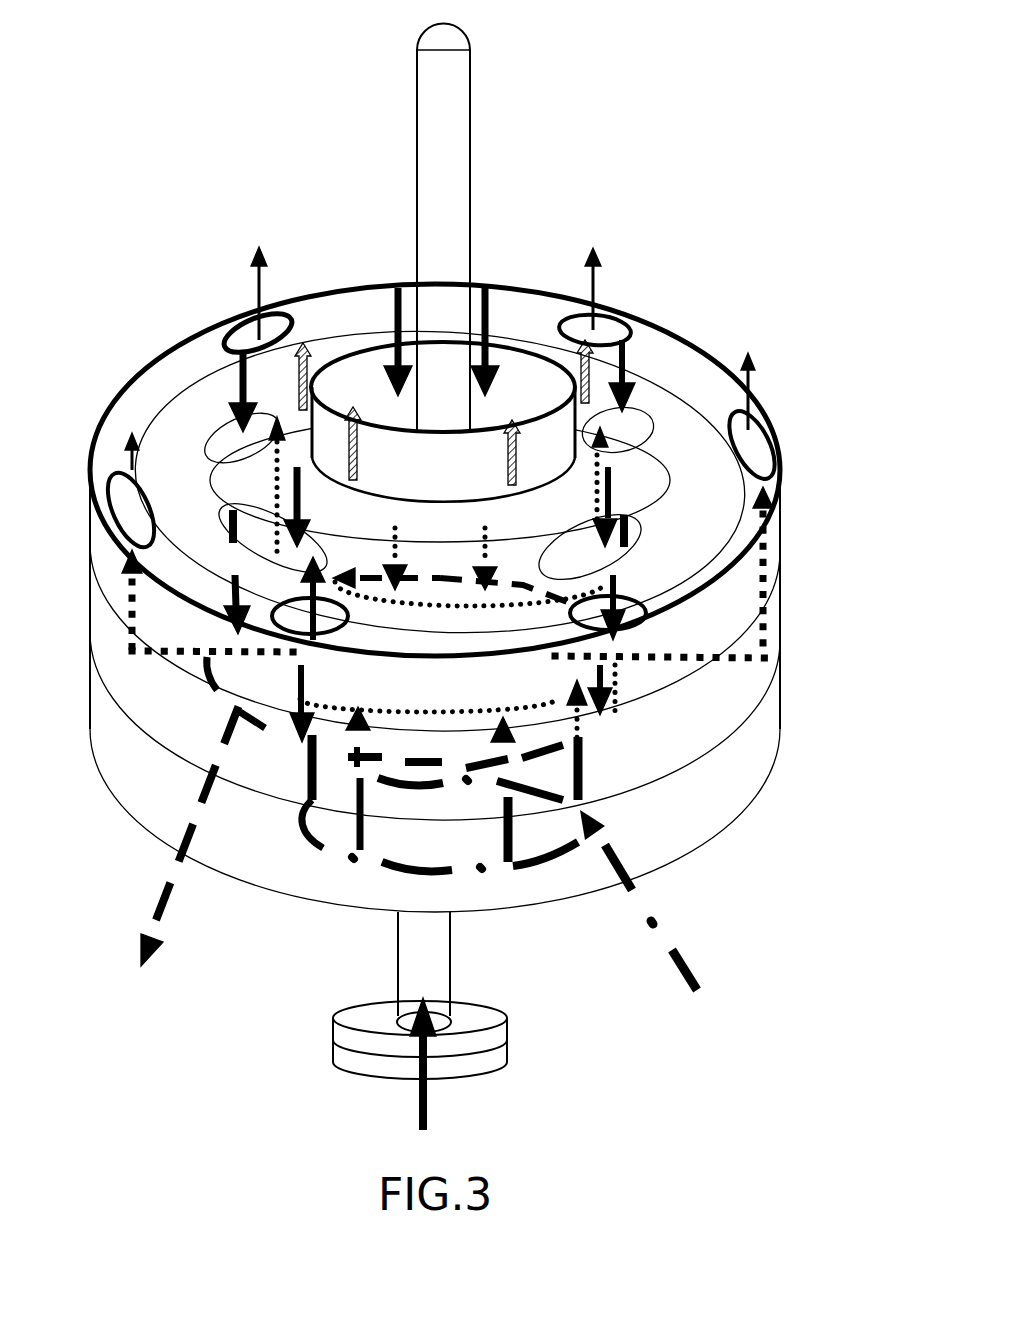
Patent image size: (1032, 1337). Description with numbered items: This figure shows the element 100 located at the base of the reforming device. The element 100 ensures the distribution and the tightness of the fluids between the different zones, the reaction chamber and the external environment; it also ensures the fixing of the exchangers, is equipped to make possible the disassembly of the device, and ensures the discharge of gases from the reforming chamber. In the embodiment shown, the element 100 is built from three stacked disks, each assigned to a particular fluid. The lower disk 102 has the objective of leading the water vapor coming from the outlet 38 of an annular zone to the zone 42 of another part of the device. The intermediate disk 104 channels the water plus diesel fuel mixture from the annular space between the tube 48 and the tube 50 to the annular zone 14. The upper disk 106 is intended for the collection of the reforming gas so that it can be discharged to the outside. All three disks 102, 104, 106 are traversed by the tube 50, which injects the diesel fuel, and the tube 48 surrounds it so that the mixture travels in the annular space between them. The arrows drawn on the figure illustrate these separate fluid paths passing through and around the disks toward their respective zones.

The element 100 is at (748, 289).
The tube 50 is at (452, 108).
The tube 48 is at (517, 338).
The zone 42 is at (587, 420).
The annular zone 14 is at (760, 452).
The upper disk 106 is at (747, 597).
The intermediate disk 104 is at (735, 684).
The lower disk 102 is at (755, 756).
The outlet 38 is at (697, 977).